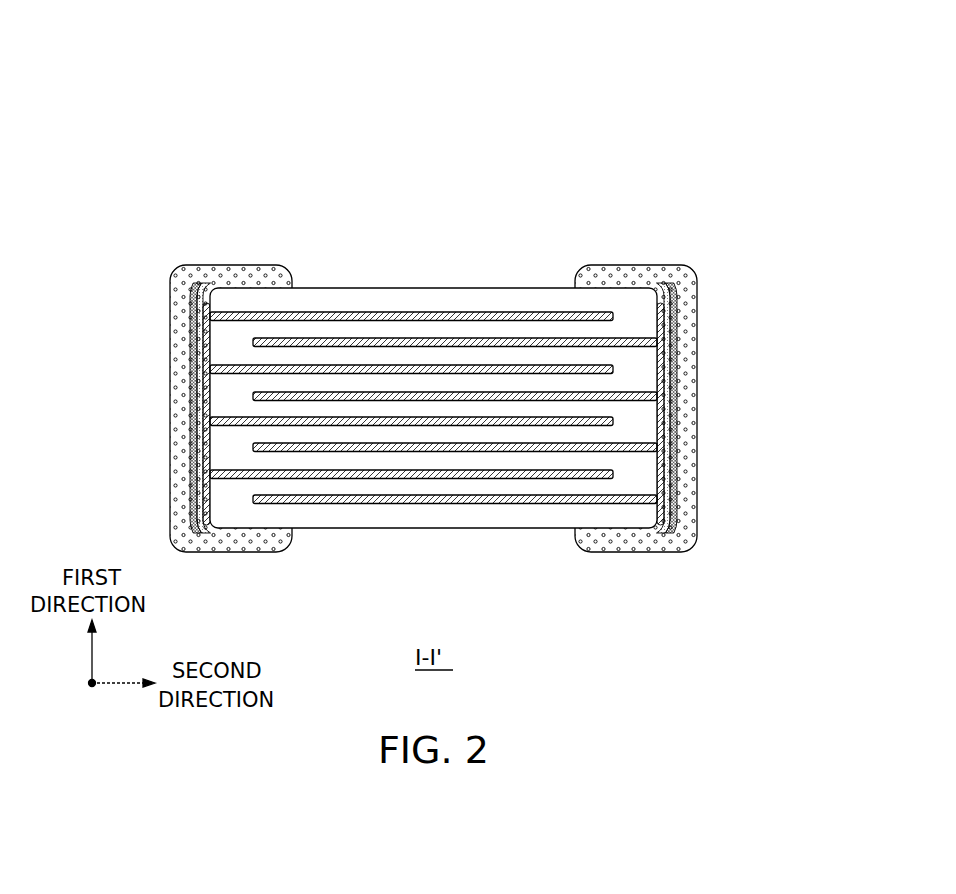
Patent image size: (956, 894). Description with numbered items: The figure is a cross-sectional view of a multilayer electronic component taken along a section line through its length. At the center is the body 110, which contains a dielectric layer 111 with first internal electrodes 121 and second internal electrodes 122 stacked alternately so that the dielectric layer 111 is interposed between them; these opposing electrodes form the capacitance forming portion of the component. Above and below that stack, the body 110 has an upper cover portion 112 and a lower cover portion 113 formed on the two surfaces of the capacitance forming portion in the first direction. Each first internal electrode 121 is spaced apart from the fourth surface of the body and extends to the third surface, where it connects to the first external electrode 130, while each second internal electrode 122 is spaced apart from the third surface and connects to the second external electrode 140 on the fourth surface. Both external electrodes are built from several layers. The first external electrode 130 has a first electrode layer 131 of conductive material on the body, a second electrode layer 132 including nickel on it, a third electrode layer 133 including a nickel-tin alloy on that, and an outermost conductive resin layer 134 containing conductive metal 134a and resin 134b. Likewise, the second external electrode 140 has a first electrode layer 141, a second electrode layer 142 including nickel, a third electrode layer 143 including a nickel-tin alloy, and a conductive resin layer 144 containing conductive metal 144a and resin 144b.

The body 110 is at (303, 288).
The dielectric layer 111 is at (505, 327).
The upper cover portion 112 is at (436, 300).
The lower cover portion 113 is at (350, 522).
The first internal electrode 121 is at (370, 316).
The second internal electrode 122 is at (572, 342).
The first external electrode 130 is at (148, 18).
The first electrode layer 131 is at (205, 345).
The second electrode layer 132 is at (200, 380).
The third electrode layer 133 is at (193, 410).
The conductive resin layer 134 is at (82, 490).
The conductive metal 134a is at (180, 445).
The resin 134b is at (180, 480).
The second external electrode 140 is at (718, 18).
The first electrode layer 141 is at (727, 343).
The second electrode layer 142 is at (727, 377).
The third electrode layer 143 is at (727, 408).
The conductive resin layer 144 is at (788, 490).
The conductive metal 144a is at (688, 445).
The resin 144b is at (690, 480).